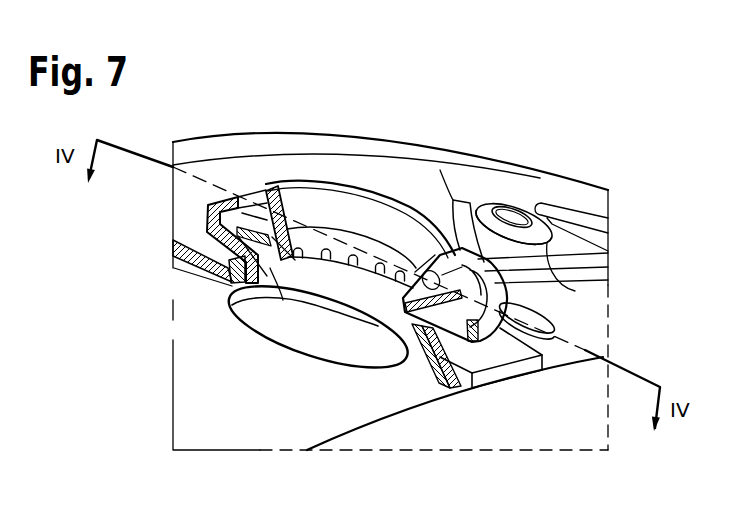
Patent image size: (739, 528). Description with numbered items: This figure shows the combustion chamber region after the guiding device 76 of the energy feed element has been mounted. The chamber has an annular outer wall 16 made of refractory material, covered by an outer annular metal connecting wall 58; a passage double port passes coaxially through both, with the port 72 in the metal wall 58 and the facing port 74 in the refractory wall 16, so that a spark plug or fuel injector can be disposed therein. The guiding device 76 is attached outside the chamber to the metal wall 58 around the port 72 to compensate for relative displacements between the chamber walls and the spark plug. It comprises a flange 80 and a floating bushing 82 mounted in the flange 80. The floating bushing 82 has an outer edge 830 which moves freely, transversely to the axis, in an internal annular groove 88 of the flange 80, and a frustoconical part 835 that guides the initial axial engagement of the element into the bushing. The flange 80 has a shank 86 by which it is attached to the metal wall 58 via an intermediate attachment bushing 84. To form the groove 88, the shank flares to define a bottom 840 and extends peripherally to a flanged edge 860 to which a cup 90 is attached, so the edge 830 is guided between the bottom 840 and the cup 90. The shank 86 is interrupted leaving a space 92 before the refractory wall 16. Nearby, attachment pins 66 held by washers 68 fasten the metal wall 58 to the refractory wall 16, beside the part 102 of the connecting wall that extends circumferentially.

The annular outer wall 16 is at (193, 415).
The outer annular metal connecting wall 58 is at (495, 186).
The attachment pins 66 is at (517, 212).
The washers 68 is at (575, 291).
The port 72 is at (228, 270).
The port 74 is at (332, 340).
The guiding device 76 is at (182, 241).
The flange 80 is at (191, 216).
The floating bushing 82 is at (397, 221).
The attachment bushing 84 is at (412, 366).
The shank 86 is at (283, 300).
The internal annular groove 88 is at (440, 347).
The cup 90 is at (473, 267).
The space 92 is at (407, 358).
The part of first metal connecting wall 102 is at (590, 197).
The outer edge 830 is at (257, 228).
The frustoconical part 835 is at (338, 213).
The bottom of the groove 840 is at (190, 275).
The flanged edge 860 is at (213, 203).